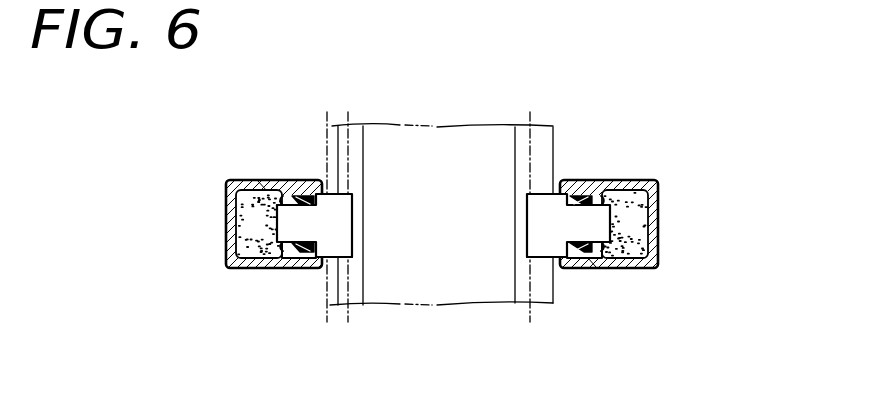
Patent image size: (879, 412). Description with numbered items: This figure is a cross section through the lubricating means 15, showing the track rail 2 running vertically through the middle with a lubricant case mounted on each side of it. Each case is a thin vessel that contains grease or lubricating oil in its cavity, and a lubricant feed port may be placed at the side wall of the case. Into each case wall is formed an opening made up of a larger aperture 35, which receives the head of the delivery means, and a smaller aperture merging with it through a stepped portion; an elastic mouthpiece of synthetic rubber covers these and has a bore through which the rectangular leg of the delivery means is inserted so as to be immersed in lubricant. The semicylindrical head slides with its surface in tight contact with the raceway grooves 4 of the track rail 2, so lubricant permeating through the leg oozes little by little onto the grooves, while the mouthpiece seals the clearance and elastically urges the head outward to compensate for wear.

The track rail 2 is at (447, 152).
The raceway grooves 4 is at (336, 312).
The lubricating means 15 is at (603, 242).
The larger aperture 35 is at (338, 132).